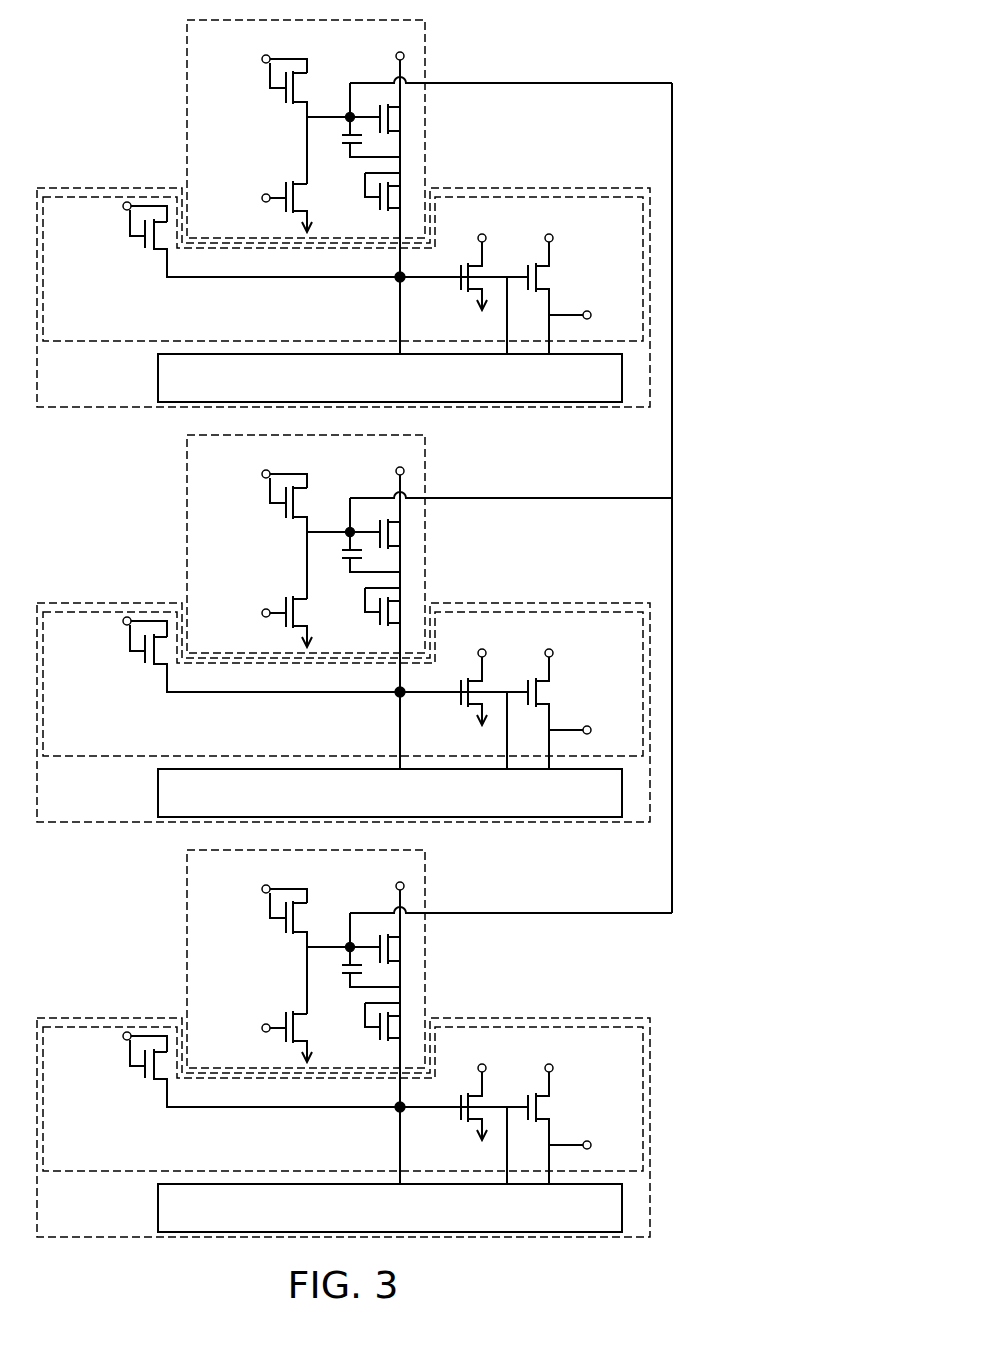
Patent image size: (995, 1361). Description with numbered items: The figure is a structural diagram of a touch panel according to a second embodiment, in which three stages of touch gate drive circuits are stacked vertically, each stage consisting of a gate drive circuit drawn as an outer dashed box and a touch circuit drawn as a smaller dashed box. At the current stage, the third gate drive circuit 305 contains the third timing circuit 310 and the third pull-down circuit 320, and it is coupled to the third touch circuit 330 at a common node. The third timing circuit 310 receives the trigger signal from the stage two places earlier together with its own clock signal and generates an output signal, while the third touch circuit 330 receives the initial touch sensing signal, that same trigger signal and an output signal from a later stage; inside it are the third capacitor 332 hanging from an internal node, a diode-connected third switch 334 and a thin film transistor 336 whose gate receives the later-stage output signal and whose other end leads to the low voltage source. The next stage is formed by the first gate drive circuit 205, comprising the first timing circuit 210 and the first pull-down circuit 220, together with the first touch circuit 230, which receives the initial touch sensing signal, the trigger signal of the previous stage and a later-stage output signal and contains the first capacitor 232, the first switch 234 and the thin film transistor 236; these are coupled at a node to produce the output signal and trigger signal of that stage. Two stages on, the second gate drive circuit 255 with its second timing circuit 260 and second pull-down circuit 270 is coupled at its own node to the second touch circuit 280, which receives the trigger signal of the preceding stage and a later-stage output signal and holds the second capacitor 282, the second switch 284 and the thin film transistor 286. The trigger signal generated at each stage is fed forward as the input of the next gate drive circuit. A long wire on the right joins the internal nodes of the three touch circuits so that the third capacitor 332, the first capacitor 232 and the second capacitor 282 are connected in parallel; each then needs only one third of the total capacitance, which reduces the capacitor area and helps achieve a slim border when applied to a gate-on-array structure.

The third gate drive circuit 305 is at (58, 187).
The third timing circuit 310 is at (115, 196).
The third pull-down circuit 320 is at (158, 372).
The third touch circuit 330 is at (424, 53).
The third capacitor 332 is at (343, 152).
The third switch 334 is at (393, 195).
The thin film transistor 336 is at (287, 183).
The first gate drive circuit 205 is at (333, 678).
The first timing circuit 210 is at (343, 662).
The first pull-down circuit 220 is at (344, 793).
The first touch circuit 230 is at (429, 602).
The first capacitor 232 is at (355, 578).
The first switch 234 is at (427, 597).
The thin film transistor 236 is at (262, 603).
The second gate drive circuit 255 is at (333, 1093).
The second timing circuit 260 is at (343, 1077).
The second pull-down circuit 270 is at (344, 1208).
The second touch circuit 280 is at (429, 1017).
The second capacitor 282 is at (355, 993).
The second switch 284 is at (427, 1012).
The thin film transistor 286 is at (262, 1018).